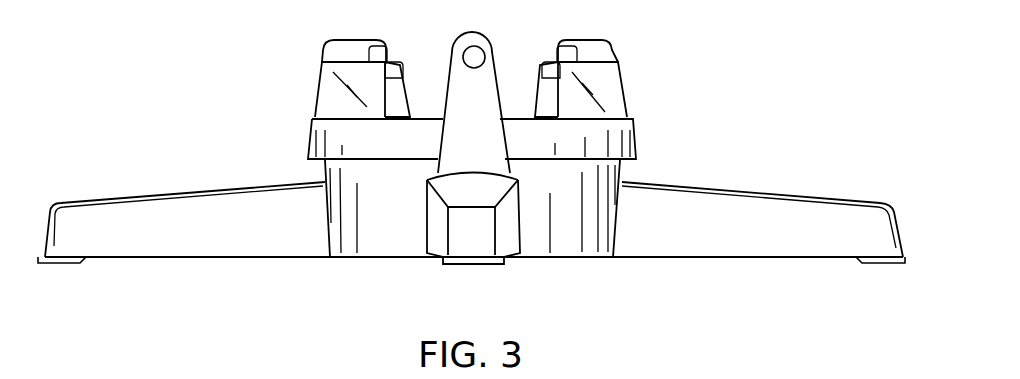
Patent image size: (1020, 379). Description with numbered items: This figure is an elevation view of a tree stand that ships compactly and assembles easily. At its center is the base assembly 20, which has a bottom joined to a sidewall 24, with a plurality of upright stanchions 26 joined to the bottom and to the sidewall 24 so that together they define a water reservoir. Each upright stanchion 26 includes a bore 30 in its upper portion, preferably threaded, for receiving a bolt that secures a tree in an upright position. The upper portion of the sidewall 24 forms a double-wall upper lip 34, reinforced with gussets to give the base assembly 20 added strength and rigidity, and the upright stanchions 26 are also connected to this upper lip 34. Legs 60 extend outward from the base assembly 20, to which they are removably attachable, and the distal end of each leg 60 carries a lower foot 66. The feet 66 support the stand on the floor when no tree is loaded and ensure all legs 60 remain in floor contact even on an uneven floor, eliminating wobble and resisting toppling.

The base assembly 20 is at (328, 48).
The sidewall 24 is at (400, 237).
The upright stanchion 26 is at (620, 88).
The bore 30 is at (476, 55).
The double-wall upper lip 34 is at (308, 142).
The leg 60 is at (752, 218).
The lower foot 66 is at (885, 265).